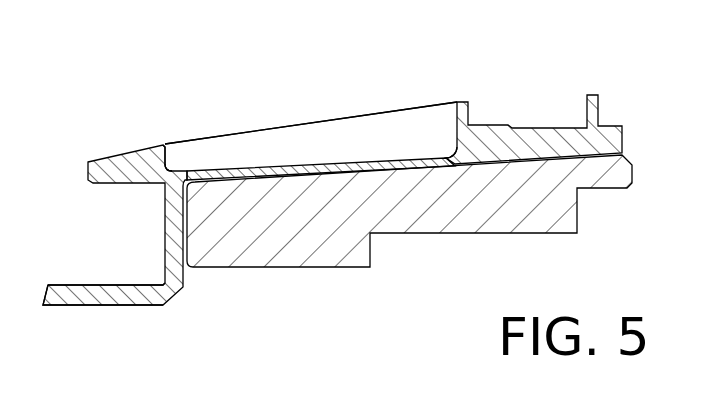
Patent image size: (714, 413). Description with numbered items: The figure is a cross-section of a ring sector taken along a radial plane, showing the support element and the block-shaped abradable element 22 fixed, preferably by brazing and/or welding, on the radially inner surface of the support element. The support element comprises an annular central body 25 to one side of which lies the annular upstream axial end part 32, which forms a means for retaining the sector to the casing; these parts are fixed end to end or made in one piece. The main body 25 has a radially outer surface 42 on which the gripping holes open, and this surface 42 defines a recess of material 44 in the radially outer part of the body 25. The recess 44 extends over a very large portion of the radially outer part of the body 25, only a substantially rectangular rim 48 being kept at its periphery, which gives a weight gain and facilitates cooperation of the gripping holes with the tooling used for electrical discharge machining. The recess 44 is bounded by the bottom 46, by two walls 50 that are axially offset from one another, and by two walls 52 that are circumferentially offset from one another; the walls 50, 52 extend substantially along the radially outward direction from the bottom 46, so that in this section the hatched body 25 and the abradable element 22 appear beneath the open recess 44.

The abradable element 22 is at (484, 233).
The central body 25 is at (317, 90).
The upstream axial end part 32 is at (103, 305).
The radially outer surface 42 is at (125, 148).
The recess of material 44 is at (332, 149).
The bottom 46 is at (292, 169).
The rim 48 is at (160, 148).
The walls axially offset from one another 50 is at (164, 150).
The walls circumferentially offset from one another 52 is at (365, 128).